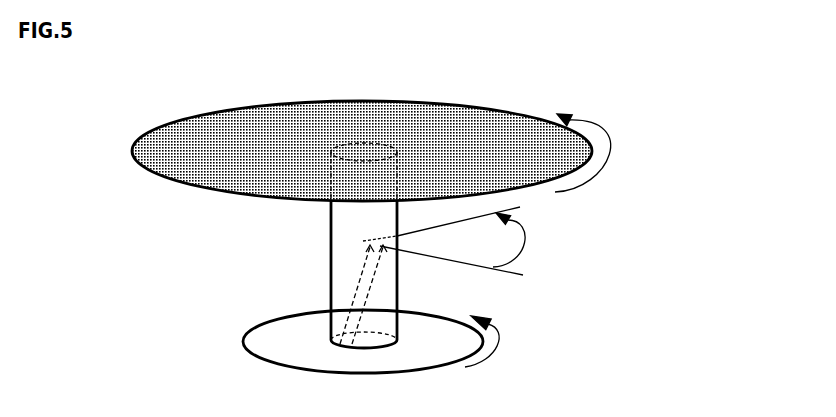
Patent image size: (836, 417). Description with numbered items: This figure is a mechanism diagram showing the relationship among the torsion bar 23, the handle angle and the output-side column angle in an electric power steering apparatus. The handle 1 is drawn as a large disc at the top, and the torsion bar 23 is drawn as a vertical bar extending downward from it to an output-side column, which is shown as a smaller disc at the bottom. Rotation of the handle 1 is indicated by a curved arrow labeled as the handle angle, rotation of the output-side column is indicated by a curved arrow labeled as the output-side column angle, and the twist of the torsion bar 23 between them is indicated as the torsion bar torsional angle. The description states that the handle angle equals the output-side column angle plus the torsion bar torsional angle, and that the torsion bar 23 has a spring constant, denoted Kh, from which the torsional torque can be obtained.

The handle 1 is at (484, 95).
The torsion bar 23 is at (340, 249).